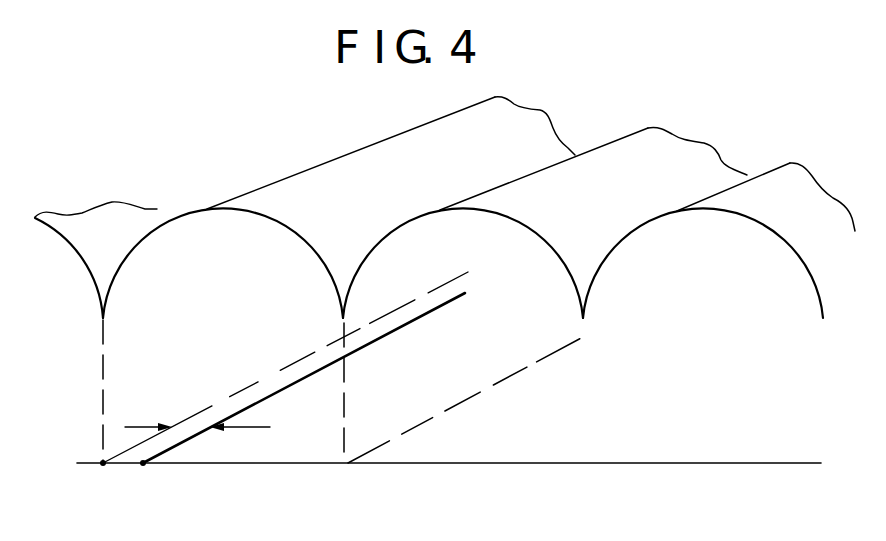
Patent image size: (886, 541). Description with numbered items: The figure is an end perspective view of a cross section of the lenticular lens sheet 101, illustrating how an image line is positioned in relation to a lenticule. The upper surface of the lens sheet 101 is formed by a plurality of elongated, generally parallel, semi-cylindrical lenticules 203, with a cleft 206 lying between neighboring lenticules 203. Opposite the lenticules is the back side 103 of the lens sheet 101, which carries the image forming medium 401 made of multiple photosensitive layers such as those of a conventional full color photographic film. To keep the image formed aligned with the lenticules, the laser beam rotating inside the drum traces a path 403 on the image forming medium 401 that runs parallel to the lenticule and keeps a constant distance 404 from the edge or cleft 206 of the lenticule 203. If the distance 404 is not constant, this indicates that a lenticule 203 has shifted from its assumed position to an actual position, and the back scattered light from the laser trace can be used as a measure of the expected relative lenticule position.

The lenticular lens sheet 101 is at (70, 375).
The back side 103 is at (377, 464).
The lenticule 203 is at (207, 212).
The cleft 206 is at (550, 166).
The image forming medium 401 is at (102, 466).
The path 403 is at (192, 438).
The constant distance 404 is at (195, 420).